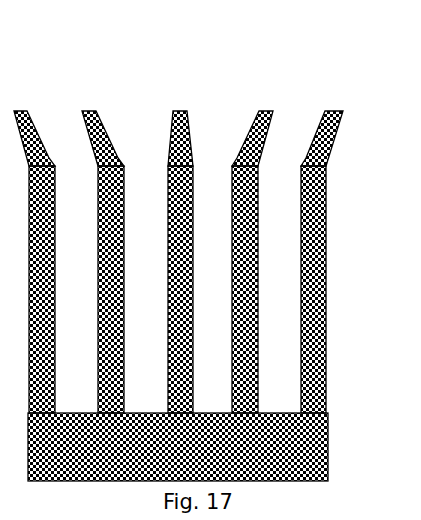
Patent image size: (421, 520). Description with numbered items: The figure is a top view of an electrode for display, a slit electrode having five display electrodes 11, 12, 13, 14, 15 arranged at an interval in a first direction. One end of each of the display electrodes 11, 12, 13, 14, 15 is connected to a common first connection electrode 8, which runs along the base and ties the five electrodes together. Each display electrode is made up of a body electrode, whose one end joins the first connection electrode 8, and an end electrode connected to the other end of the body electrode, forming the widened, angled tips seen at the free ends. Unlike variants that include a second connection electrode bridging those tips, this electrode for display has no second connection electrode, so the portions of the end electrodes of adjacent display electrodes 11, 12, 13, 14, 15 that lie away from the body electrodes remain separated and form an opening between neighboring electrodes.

The first connection electrode 8 is at (330, 448).
The display electrode 11 is at (181, 122).
The display electrode 12 is at (262, 122).
The display electrode 13 is at (96, 122).
The display electrode 14 is at (331, 122).
The display electrode 15 is at (29, 122).